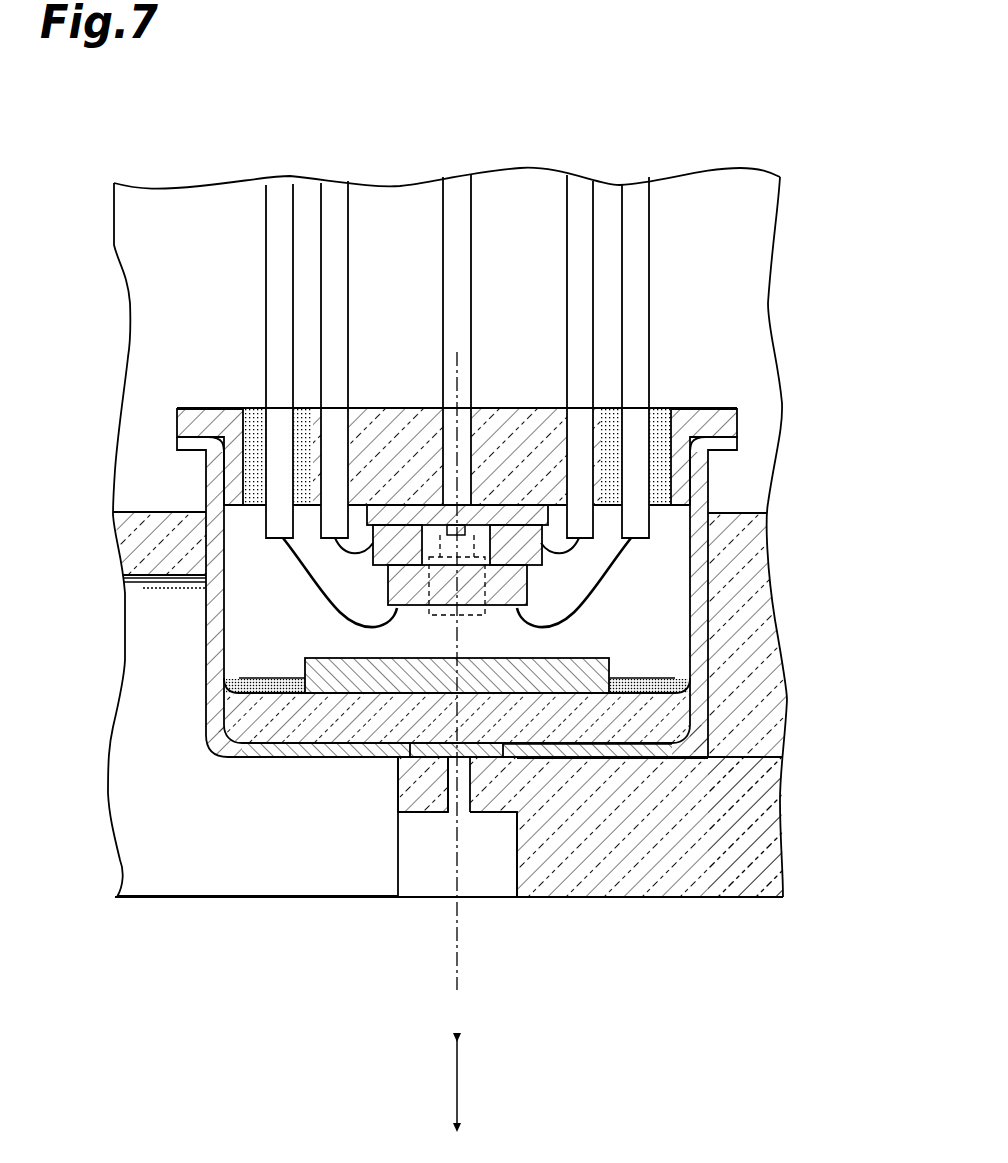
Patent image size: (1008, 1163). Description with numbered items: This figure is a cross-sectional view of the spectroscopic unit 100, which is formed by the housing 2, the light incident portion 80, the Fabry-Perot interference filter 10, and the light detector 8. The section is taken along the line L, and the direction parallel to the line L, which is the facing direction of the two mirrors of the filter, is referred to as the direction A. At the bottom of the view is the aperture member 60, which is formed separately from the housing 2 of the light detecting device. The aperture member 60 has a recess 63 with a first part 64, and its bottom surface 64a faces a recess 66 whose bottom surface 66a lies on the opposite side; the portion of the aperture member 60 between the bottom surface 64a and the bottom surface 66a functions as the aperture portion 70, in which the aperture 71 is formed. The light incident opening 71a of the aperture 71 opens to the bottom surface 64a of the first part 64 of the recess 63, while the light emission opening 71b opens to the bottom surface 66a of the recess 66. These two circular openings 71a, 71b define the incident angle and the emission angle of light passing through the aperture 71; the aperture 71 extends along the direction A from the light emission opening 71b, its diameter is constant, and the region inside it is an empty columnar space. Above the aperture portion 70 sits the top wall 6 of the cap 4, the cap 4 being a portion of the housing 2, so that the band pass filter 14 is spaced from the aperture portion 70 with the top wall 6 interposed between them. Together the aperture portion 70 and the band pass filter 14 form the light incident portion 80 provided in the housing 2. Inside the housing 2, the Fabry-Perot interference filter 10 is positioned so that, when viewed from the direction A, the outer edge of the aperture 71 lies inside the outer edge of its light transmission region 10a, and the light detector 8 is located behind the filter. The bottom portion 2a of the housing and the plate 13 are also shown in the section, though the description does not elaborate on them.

The spectroscopic unit 100 is at (345, 935).
The cap 4 is at (496, 532).
The housing 2 is at (697, 640).
The bottom portion of housing 2a is at (567, 723).
The light detector 8 is at (463, 510).
The Fabry-Perot interference filter 10 is at (392, 578).
The light transmission region 10a is at (450, 522).
The band pass filter 14 is at (600, 650).
The recess 66 is at (529, 597).
The bottom surface of the recess 66a is at (655, 738).
The bottom plate 13 is at (402, 848).
The top wall 6 is at (605, 758).
The aperture member 60 is at (482, 875).
The recess 63 is at (181, 838).
The first part 64 is at (505, 858).
The bottom surface of the first part 64a is at (417, 817).
The aperture portion 70 is at (417, 783).
The aperture 71 is at (378, 860).
The light incident opening 71a is at (445, 832).
The light emission opening 71b is at (437, 757).
The light incident portion 80 is at (485, 820).
The line L is at (457, 945).
The direction A is at (461, 1087).